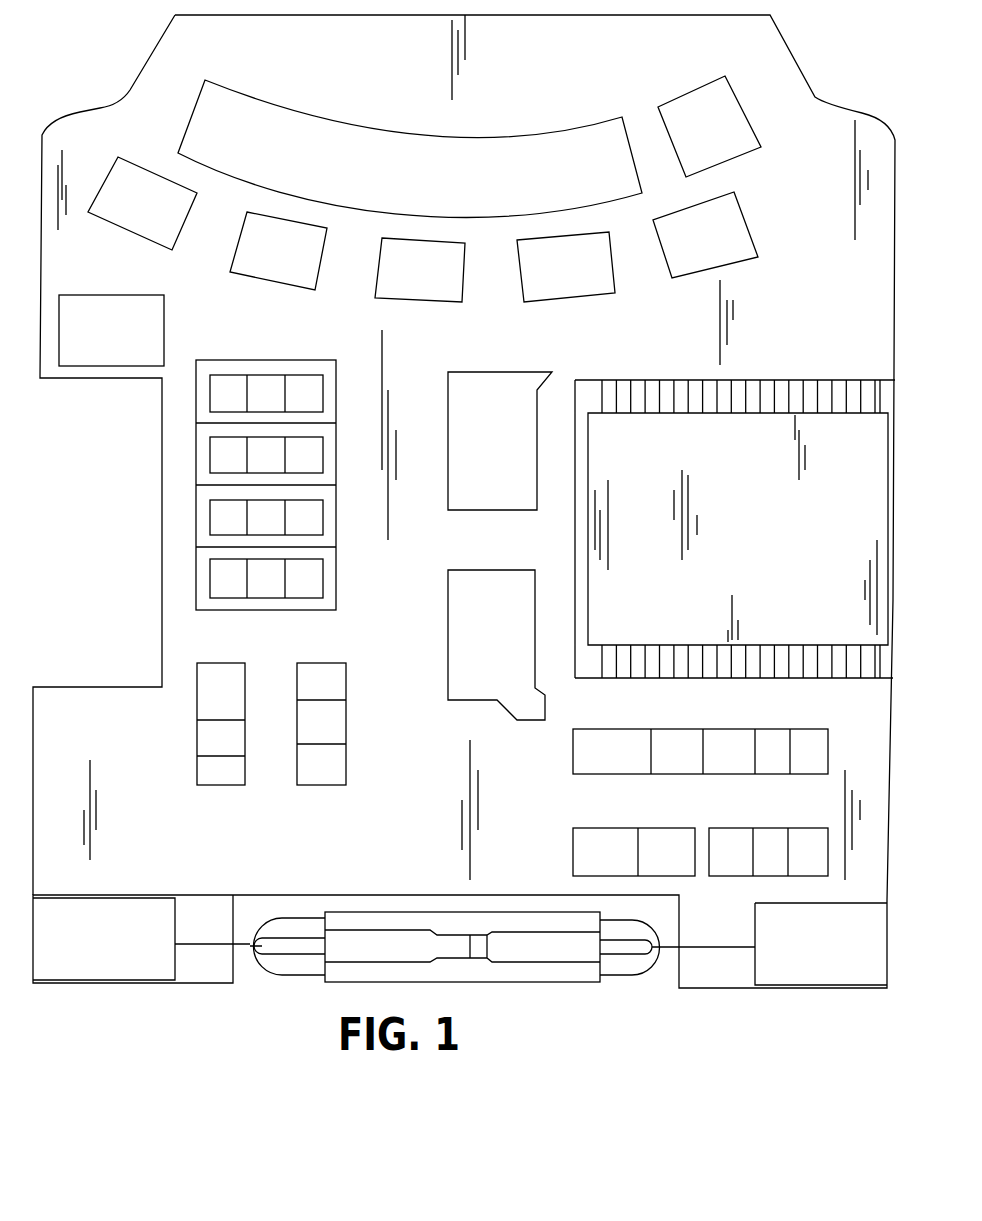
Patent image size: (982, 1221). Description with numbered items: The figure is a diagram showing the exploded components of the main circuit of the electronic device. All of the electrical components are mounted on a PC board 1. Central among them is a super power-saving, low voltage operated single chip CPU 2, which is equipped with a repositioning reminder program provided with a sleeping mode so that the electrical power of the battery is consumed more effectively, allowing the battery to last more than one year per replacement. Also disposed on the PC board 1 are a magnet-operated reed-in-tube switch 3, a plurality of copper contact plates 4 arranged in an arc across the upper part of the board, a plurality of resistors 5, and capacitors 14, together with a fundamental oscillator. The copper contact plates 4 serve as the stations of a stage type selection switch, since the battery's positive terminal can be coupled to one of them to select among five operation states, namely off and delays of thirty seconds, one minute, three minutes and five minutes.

The PC board 1 is at (197, 990).
The single chip CPU 2 is at (731, 529).
The magnet-operated reed-in-tube switch 3 is at (525, 990).
The copper contact plates 4 is at (424, 189).
The resistors 5 is at (353, 545).
The capacitors 14 is at (293, 782).